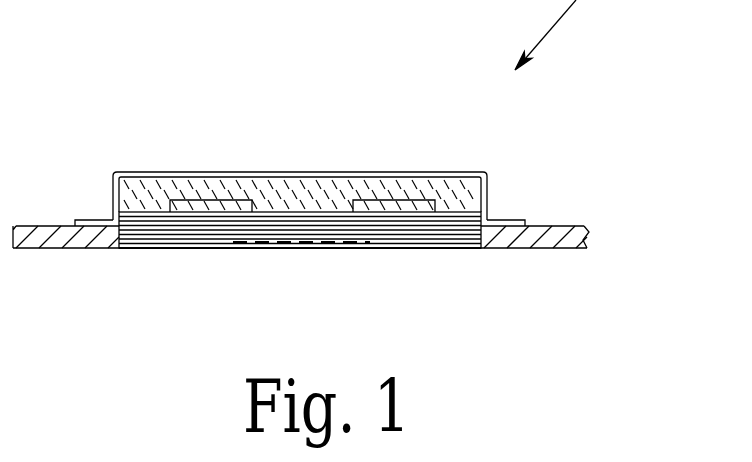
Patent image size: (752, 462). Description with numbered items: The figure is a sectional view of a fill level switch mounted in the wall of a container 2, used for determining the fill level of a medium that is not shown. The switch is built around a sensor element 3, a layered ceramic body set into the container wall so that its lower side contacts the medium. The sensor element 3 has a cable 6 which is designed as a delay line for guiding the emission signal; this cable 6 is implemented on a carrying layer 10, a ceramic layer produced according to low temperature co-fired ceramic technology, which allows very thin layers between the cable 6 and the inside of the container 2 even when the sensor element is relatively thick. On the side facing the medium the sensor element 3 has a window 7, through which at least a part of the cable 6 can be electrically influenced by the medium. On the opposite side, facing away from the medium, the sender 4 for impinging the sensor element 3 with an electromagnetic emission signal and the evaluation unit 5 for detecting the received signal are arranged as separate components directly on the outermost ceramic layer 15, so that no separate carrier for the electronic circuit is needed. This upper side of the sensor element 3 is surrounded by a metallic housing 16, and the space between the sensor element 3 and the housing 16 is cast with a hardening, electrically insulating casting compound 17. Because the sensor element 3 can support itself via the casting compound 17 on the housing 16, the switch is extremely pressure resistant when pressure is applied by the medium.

The container 2 is at (540, 228).
The sensor element 3 is at (145, 266).
The sender 4 is at (221, 200).
The evaluation unit 5 is at (368, 204).
The cable 6 is at (322, 250).
The window 7 is at (250, 262).
The carrying layer 10 is at (402, 250).
The outermost ceramic layer 15 is at (443, 212).
The housing 16 is at (157, 170).
The casting compound 17 is at (272, 178).